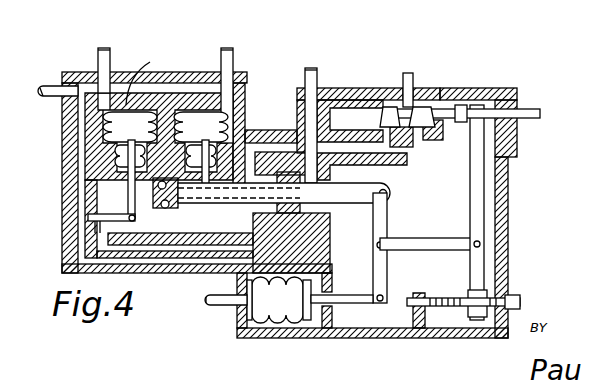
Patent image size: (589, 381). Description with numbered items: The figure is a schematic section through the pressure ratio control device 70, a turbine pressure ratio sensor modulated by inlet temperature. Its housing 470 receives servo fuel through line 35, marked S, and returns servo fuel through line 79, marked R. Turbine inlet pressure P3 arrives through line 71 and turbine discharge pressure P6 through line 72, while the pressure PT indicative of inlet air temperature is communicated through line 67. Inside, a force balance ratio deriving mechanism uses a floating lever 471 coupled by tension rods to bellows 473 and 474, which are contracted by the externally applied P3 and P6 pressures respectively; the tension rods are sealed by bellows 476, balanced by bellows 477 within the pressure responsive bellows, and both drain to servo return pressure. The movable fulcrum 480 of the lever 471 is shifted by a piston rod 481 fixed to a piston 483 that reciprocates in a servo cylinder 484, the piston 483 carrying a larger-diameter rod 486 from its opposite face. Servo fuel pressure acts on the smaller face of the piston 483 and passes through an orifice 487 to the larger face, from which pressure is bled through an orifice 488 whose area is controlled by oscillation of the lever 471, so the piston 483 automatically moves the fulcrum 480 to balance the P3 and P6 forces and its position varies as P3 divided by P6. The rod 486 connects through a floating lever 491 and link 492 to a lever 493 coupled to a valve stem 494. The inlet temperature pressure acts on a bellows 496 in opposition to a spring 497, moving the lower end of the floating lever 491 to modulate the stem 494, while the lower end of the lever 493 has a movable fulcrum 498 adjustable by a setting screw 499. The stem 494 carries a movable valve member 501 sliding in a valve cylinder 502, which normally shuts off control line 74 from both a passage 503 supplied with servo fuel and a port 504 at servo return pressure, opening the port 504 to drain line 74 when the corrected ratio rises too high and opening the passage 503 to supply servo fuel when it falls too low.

The pressure ratio control device 70 is at (512, 171).
The control line 74 is at (422, 89).
The housing 470 is at (492, 88).
The bellows 473 is at (240, 87).
The orifice 487 is at (246, 150).
The orifice 488 is at (84, 238).
The servo cylinder 484 is at (260, 166).
The piston rod 481 is at (272, 200).
The valve cylinder 502 is at (363, 108).
The line 79 is at (57, 86).
The reservoir line R is at (42, 92).
The line 72 is at (110, 62).
The turbine discharge pressure P6 is at (104, 48).
The bellows 477 is at (151, 76).
The line 71 is at (233, 56).
The turbine inlet pressure P3 is at (226, 48).
The line 35 is at (318, 76).
The supply line S is at (310, 68).
The movable valve member 501 is at (409, 73).
The bellows 474 is at (103, 142).
The bellows 476 is at (117, 158).
The movable fulcrum 480 is at (154, 188).
The floating lever 471 is at (90, 215).
The piston 483 is at (312, 205).
The rod 486 is at (388, 193).
The floating lever 491 is at (388, 273).
The link 492 is at (412, 240).
The lever 493 is at (486, 217).
The valve stem 494 is at (540, 113).
The passage 503 is at (390, 142).
The port 504 is at (426, 130).
The movable fulcrum 498 is at (488, 296).
The setting screw 499 is at (522, 307).
The bellows 496 is at (272, 325).
The spring 497 is at (312, 322).
The line 67 is at (213, 303).
The pressure indicative of inlet air temperature PT is at (205, 300).